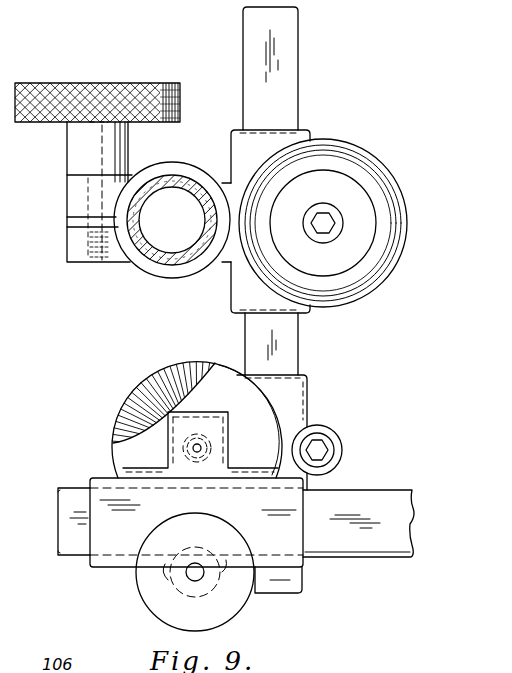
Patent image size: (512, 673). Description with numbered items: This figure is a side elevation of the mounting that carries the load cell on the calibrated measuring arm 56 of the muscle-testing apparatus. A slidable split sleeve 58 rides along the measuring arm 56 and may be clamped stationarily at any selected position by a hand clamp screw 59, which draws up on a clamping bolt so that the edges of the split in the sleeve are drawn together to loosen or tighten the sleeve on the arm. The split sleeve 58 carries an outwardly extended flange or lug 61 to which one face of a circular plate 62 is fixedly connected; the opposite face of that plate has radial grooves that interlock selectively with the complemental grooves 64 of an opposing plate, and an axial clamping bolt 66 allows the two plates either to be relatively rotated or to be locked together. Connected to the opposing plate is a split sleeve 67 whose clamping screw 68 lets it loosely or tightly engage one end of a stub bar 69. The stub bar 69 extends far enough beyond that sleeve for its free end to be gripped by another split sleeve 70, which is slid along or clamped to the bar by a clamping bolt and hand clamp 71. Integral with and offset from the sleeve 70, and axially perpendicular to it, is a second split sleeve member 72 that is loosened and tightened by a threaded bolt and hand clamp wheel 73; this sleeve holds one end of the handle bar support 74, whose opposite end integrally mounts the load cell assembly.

The measuring arm 56 is at (366, 545).
The split sleeve 58 is at (284, 512).
The hand clamp screw 59 is at (152, 606).
The flange or lug 61 is at (218, 428).
The circular plate 62 is at (238, 400).
The complemental grooves 64 is at (157, 383).
The axial clamping bolt 66 is at (186, 448).
The split sleeve 67 is at (295, 392).
The clamping screw 68 is at (333, 448).
The stub bar 69 is at (287, 55).
The split sleeve 70 is at (245, 142).
The clamping bolt and hand clamp 71 is at (385, 169).
The second split sleeve member 72 is at (170, 163).
The threaded bolt and hand clamp wheel 73 is at (108, 83).
The handle bar support 74 is at (167, 267).